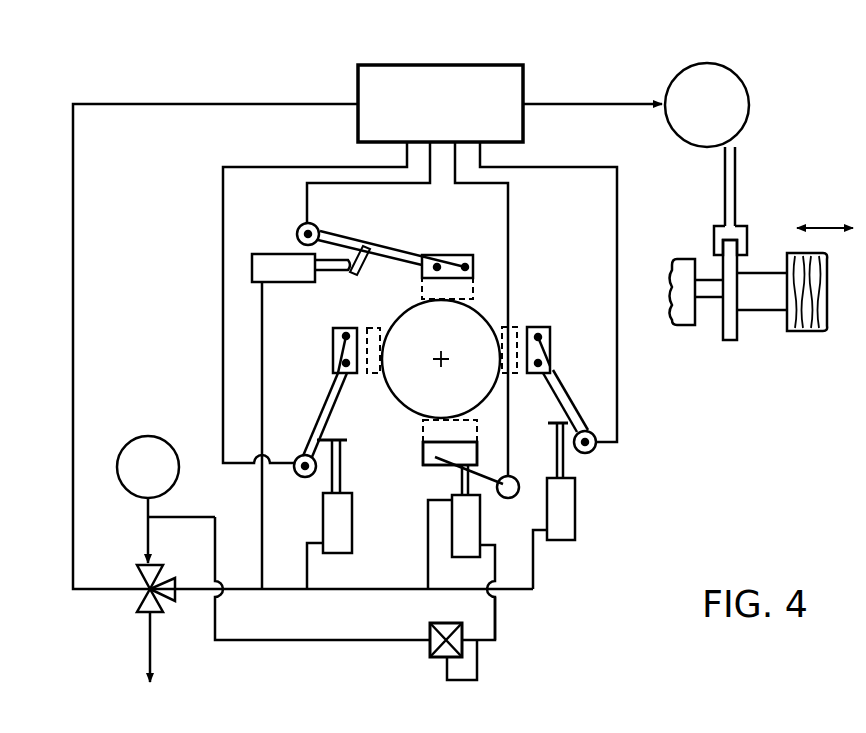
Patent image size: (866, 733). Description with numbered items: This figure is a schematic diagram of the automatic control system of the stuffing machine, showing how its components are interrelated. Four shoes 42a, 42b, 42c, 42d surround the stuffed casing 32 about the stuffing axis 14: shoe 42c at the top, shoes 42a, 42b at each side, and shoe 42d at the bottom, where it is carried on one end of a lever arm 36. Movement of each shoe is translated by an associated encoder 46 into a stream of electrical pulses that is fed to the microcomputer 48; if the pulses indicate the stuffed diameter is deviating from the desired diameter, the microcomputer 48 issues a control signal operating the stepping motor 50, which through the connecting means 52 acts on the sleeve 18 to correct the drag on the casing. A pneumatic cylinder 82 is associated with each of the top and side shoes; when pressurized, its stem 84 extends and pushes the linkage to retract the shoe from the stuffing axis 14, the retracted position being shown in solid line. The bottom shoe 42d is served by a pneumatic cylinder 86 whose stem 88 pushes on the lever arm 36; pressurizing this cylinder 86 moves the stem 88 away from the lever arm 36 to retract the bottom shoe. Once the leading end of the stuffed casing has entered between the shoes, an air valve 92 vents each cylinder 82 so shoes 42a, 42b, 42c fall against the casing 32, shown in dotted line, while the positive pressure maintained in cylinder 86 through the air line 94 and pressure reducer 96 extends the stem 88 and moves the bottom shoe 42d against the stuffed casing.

The stuffing axis 14 is at (446, 354).
The sleeve 18 is at (764, 302).
The stuffed casing 32 is at (401, 316).
The lever arm 36 is at (483, 470).
The shoe 42a is at (331, 340).
The shoe 42b is at (548, 327).
The shoe 42c is at (460, 255).
The shoe 42d is at (422, 440).
The encoder 46 is at (320, 226).
The microcomputer 48 is at (525, 62).
The stepping motor 50 is at (750, 97).
The means for connecting 52 is at (737, 183).
The pneumatic cylinder 82 is at (272, 252).
The stem 84 is at (338, 273).
The pneumatic cylinder 86 is at (480, 519).
The stem 88 is at (455, 481).
The air valve 92 is at (140, 597).
The air line 94 is at (497, 625).
The pressure reducer 96 is at (425, 648).